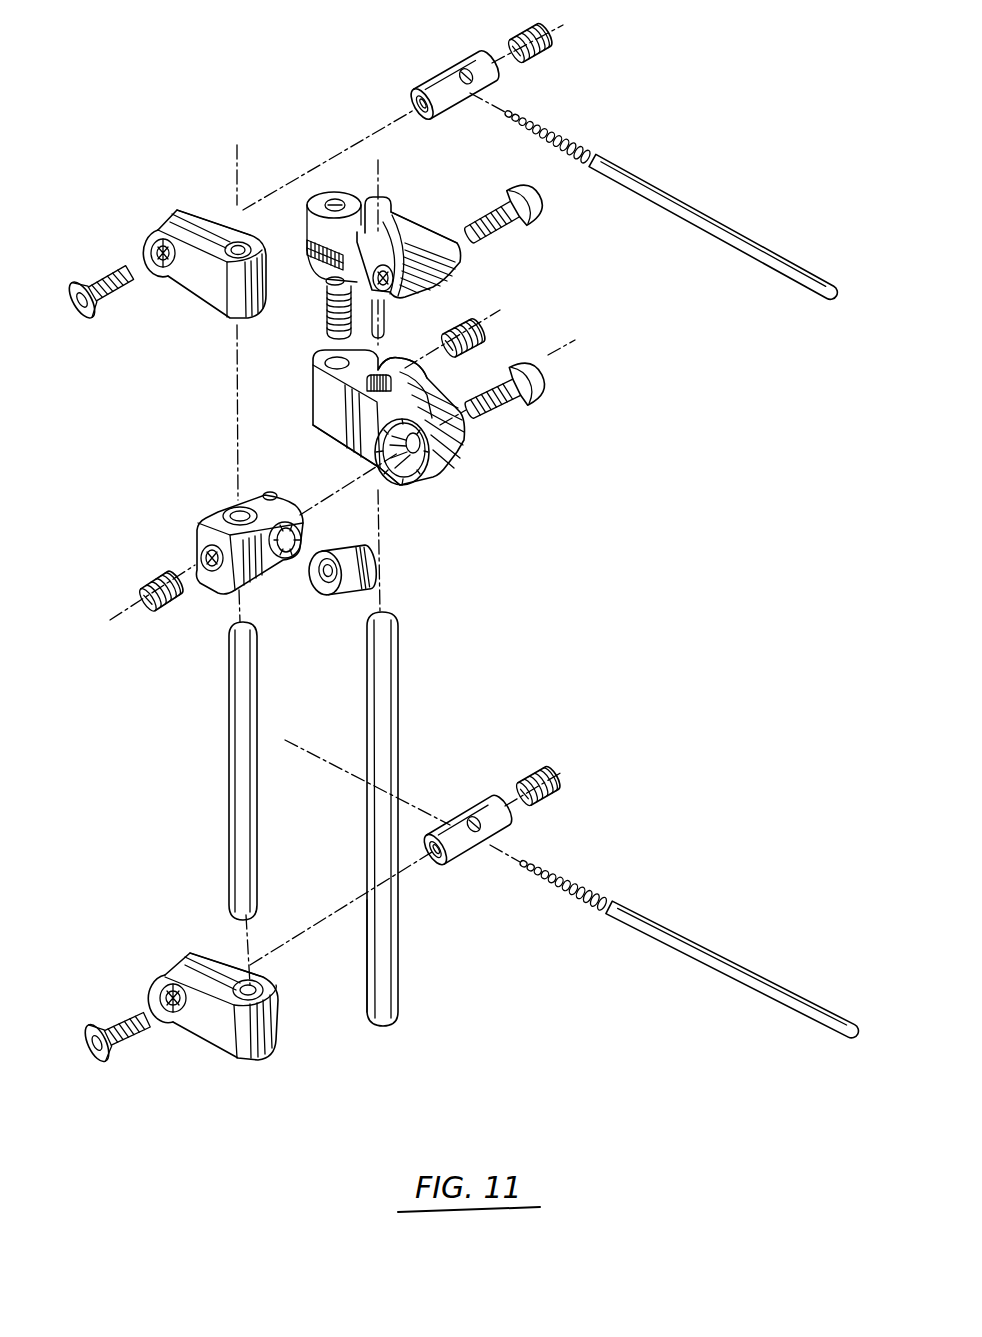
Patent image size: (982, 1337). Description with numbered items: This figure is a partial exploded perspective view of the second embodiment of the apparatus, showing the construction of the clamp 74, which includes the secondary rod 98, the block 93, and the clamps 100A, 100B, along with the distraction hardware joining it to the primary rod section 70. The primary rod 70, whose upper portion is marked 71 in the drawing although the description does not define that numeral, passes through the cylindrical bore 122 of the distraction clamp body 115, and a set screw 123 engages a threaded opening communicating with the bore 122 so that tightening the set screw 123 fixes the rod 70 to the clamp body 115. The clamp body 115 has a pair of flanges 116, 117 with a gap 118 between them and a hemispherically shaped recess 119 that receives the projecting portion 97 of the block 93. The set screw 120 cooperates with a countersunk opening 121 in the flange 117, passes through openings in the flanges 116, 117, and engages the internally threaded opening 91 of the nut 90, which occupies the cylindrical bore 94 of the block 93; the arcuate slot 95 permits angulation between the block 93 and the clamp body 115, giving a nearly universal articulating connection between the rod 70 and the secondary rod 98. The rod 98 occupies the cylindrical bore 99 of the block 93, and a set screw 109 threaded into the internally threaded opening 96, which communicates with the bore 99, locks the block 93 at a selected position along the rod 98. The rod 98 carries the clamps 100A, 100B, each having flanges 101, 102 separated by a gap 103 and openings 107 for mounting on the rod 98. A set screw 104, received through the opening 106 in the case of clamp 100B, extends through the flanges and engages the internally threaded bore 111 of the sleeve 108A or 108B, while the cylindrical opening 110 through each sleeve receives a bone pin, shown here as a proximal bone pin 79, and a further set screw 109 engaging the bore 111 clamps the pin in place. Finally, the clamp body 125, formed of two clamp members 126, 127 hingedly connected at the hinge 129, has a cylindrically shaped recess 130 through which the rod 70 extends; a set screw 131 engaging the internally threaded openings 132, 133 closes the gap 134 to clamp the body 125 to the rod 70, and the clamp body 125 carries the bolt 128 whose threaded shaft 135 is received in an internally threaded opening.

The primary rod section 70 is at (393, 977).
The rod 71 is at (395, 618).
The clamp 74 is at (232, 96).
The proximal bone pins 79 is at (710, 216).
The nut 90 is at (372, 566).
The internally threaded opening 91 is at (326, 592).
The block 93 is at (205, 528).
The cylindrical bore 94 is at (287, 560).
The arcuate slot 95 is at (290, 500).
The internally threaded opening 96 is at (212, 572).
The projecting portion 97 is at (303, 518).
The secondary rod section 98 is at (243, 833).
The cylindrical bore 99 is at (237, 500).
The clamp 100A is at (212, 297).
The clamp 100B is at (213, 1023).
The flange 101 is at (158, 230).
The flange 102 is at (200, 218).
The gap 103 is at (181, 216).
The set screw 104 is at (78, 315).
The opening 106 is at (173, 1022).
The openings 107 is at (239, 242).
The internally threaded sleeve 108A is at (440, 78).
The sleeve 108B is at (470, 863).
The set screw 109 is at (147, 573).
The cylindrical opening 110 is at (497, 89).
The internally threaded bore 111 is at (410, 101).
The distraction clamp body 115 is at (314, 412).
The flange 116 is at (437, 470).
The flange 117 is at (463, 456).
The gap 118 is at (428, 390).
The hemispherically-shaped recess 119 is at (397, 480).
The set screw 120 is at (548, 355).
The countersunk opening 121 is at (478, 416).
The cylindrical bore 122 is at (393, 344).
The set screw 123 is at (478, 328).
The clamp body 125 is at (395, 200).
The clamp member 126 is at (465, 245).
The clamp member 127 is at (326, 282).
The bolt 128 is at (330, 193).
The hinge 129 is at (310, 258).
The cylindrically-shaped recess 130 is at (382, 195).
The set screw 131 is at (548, 206).
The internally threaded opening 132 is at (453, 208).
The internally threaded opening 133 is at (393, 318).
The gap 134 is at (427, 285).
The threaded shaft 135 is at (325, 313).